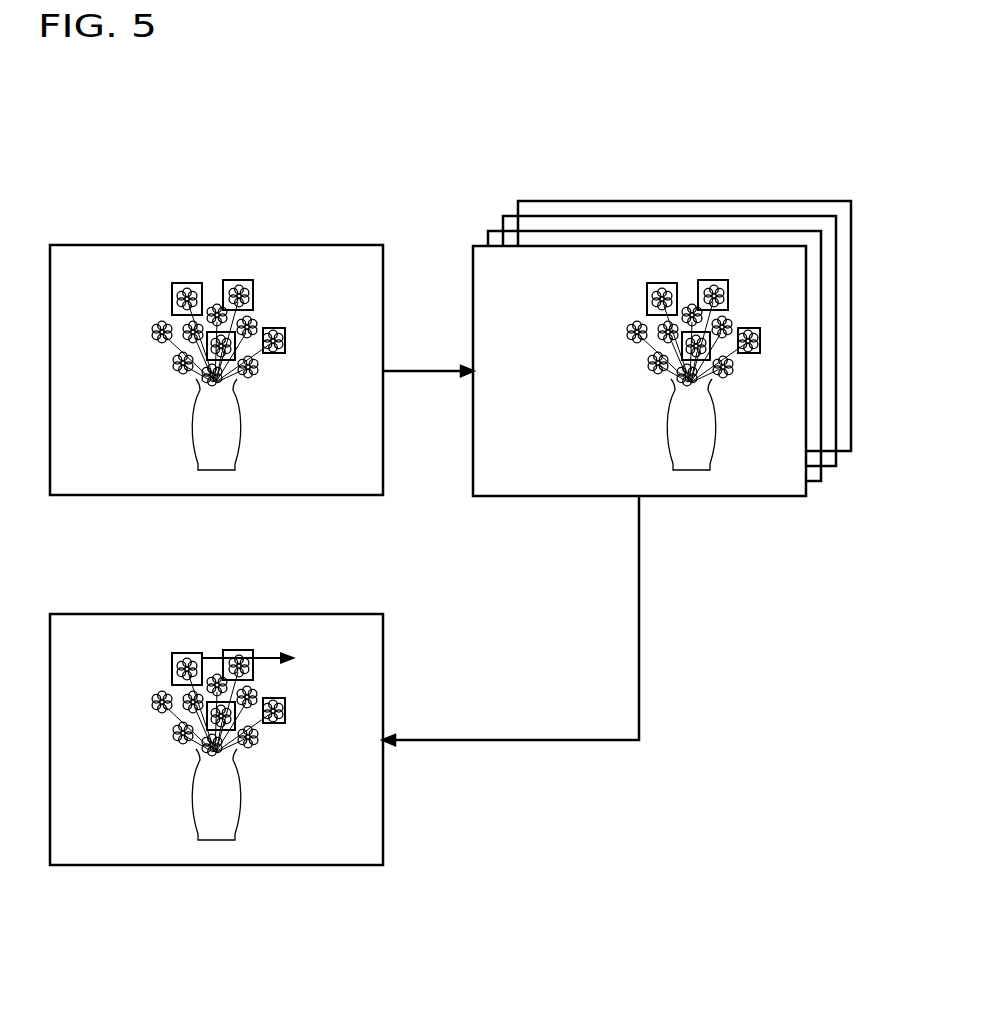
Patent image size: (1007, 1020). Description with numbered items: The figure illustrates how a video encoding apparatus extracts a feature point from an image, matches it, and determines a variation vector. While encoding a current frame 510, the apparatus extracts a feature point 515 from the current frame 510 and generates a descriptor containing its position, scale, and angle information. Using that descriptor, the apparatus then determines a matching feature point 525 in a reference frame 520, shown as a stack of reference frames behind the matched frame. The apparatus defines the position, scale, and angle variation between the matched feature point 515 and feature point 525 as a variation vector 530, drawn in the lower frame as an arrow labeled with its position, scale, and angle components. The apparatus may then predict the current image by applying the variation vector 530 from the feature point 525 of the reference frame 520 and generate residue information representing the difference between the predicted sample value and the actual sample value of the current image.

The current frame 510 is at (220, 244).
The feature point 515 is at (187, 283).
The reference frame 520 is at (543, 245).
The feature point of reference frame 525 is at (662, 283).
The variation vector 530 is at (270, 658).